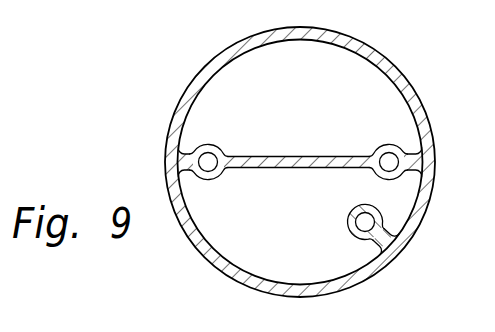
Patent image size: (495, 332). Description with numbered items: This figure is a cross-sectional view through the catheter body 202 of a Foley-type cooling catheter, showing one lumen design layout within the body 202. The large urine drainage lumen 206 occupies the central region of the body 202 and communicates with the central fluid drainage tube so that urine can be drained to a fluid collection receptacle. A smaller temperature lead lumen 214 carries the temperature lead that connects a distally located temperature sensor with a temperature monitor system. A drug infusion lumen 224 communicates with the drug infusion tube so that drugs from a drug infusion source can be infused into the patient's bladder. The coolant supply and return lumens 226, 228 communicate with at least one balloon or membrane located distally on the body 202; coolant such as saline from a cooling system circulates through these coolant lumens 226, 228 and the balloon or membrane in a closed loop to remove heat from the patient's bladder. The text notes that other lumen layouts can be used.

The body 202 is at (400, 74).
The urine drainage lumen 206 is at (253, 67).
The temperature lead lumen 214 is at (362, 219).
The drug infusion lumen 224 is at (247, 233).
The coolant supply lumen 226 is at (388, 158).
The coolant return lumen 228 is at (208, 158).